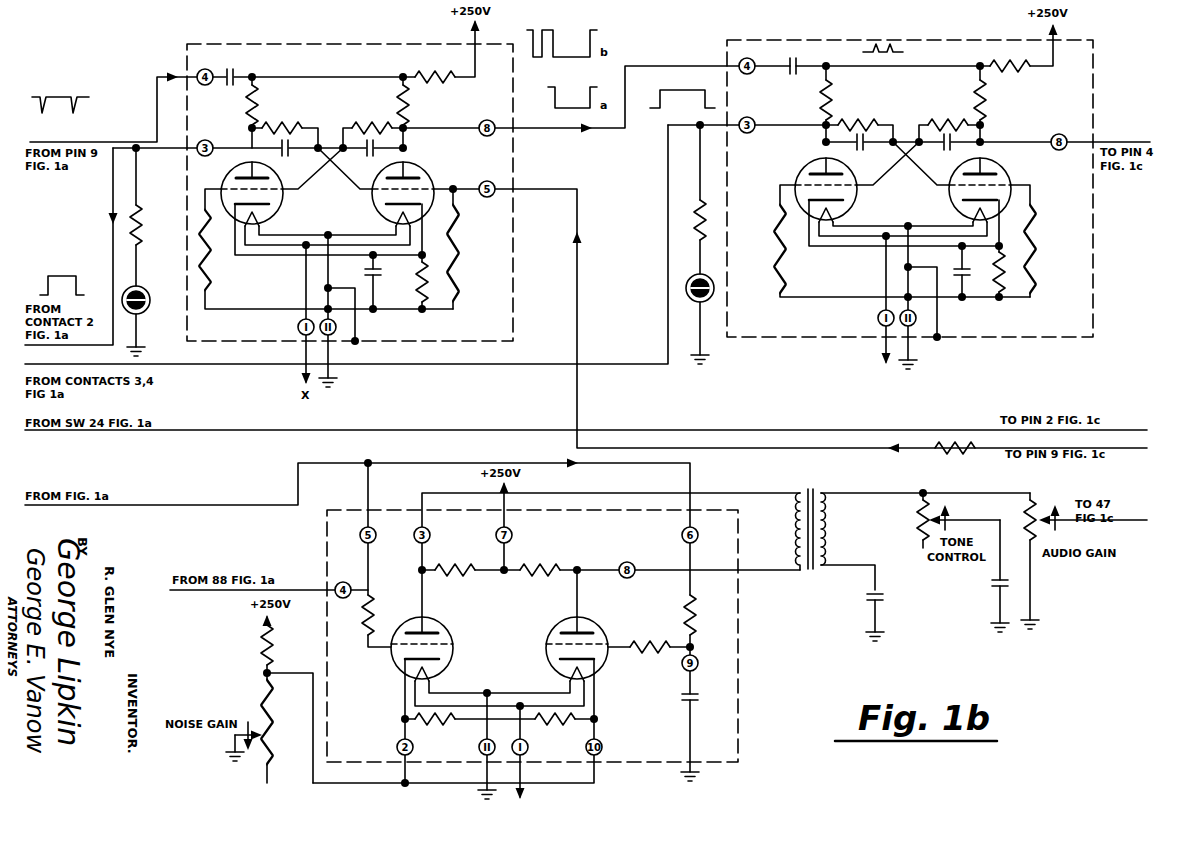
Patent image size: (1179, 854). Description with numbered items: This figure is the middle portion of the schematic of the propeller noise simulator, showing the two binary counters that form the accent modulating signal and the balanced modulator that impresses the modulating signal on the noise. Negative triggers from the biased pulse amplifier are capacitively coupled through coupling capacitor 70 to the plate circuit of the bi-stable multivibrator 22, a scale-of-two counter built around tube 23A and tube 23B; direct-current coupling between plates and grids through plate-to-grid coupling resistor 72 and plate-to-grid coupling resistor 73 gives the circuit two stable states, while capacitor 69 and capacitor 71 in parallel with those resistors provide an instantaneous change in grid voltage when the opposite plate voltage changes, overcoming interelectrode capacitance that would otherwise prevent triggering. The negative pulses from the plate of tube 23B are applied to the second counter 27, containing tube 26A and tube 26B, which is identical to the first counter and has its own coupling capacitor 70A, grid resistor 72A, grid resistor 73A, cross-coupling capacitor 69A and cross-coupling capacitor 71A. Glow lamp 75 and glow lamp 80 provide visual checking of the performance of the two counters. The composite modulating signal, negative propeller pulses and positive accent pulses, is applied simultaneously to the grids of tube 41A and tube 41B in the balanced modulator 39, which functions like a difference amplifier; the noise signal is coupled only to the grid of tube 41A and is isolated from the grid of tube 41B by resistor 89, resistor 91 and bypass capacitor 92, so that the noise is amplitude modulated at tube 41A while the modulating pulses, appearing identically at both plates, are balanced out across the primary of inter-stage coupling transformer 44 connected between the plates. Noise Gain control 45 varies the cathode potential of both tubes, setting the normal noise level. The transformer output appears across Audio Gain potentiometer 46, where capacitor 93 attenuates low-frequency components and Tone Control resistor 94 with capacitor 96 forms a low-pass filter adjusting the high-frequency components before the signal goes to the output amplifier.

The bi-stable multivibrator 22 is at (324, 44).
The second counter 27 is at (875, 40).
The balanced modulator 39 is at (383, 510).
The inter-stage coupling transformer 44 is at (825, 493).
The Noise Gain control 45 is at (255, 714).
The Audio Gain potentiometer 46 is at (1041, 506).
The coupling capacitor 70 is at (226, 76).
The coupling capacitor 70A is at (792, 73).
The plate-to-grid coupling resistor 72 is at (284, 127).
The grid resistor 72A is at (876, 114).
The plate-to-grid coupling resistor 73 is at (375, 120).
The grid resistor 73A is at (945, 108).
The capacitor 69 is at (288, 158).
The cross-coupling capacitor 69A is at (864, 152).
The capacitor 71 is at (365, 158).
The cross-coupling capacitor 71A is at (943, 152).
The tube 23A is at (280, 204).
The tube 23B is at (413, 165).
The tube 26A is at (848, 200).
The tube 26B is at (956, 201).
The tube 41A is at (440, 629).
The tube 41B is at (554, 629).
The glow lamp 75 is at (145, 298).
The glow lamp 80 is at (694, 303).
The resistor 89 is at (654, 653).
The resistor 91 is at (682, 615).
The bypass capacitor 92 is at (681, 691).
The capacitor 93 is at (883, 603).
The Tone Control resistor 94 is at (918, 531).
The capacitor 96 is at (990, 586).